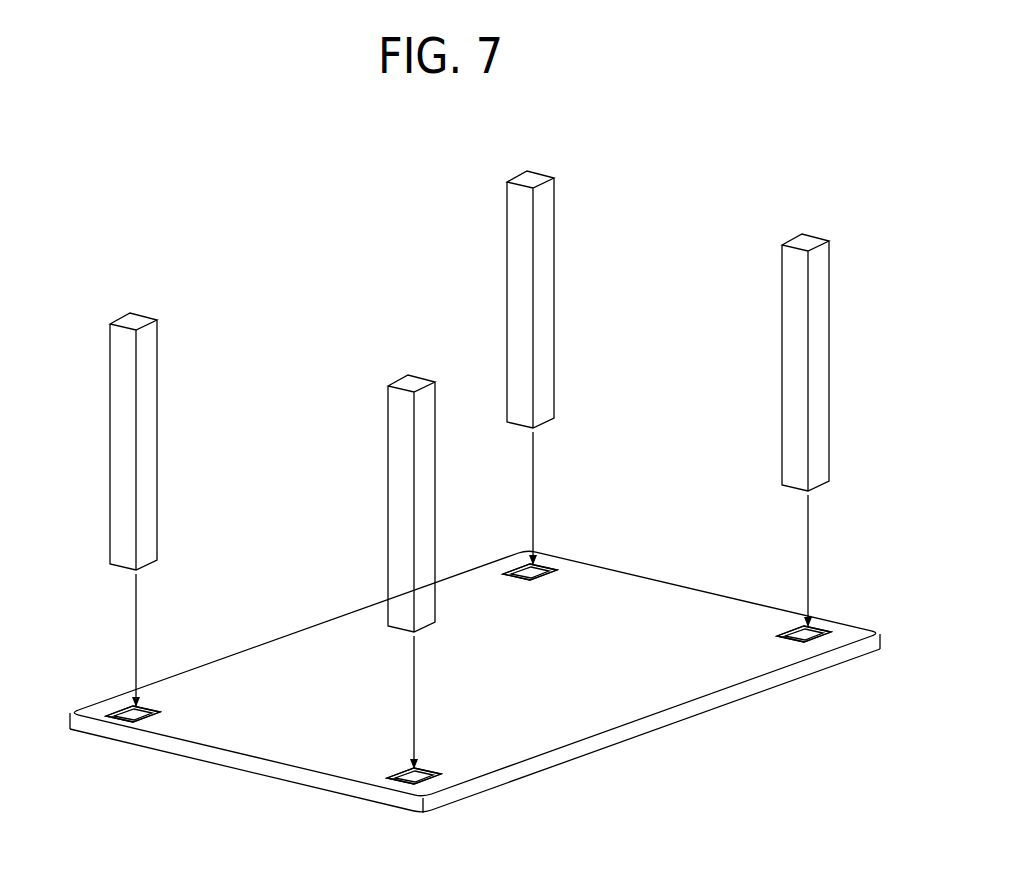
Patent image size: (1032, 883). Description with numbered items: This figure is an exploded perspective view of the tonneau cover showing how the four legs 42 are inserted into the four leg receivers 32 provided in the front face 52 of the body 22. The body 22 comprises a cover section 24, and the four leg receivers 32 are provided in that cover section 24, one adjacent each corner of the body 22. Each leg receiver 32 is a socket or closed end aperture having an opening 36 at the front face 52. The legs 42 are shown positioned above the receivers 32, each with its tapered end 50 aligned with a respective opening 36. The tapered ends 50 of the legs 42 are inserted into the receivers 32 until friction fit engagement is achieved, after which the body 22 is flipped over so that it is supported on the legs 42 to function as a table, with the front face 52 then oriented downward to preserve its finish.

The body 22 is at (288, 607).
The cover section 24 is at (613, 703).
The front face 52 is at (280, 747).
The leg receiver 32 is at (123, 683).
The opening 36 is at (123, 715).
The leg 42 is at (398, 426).
The tapered end 50 is at (157, 567).